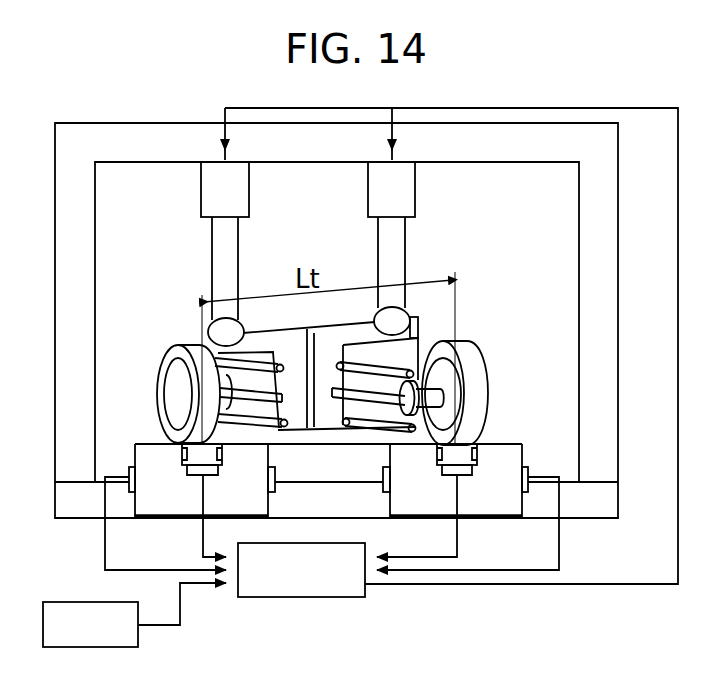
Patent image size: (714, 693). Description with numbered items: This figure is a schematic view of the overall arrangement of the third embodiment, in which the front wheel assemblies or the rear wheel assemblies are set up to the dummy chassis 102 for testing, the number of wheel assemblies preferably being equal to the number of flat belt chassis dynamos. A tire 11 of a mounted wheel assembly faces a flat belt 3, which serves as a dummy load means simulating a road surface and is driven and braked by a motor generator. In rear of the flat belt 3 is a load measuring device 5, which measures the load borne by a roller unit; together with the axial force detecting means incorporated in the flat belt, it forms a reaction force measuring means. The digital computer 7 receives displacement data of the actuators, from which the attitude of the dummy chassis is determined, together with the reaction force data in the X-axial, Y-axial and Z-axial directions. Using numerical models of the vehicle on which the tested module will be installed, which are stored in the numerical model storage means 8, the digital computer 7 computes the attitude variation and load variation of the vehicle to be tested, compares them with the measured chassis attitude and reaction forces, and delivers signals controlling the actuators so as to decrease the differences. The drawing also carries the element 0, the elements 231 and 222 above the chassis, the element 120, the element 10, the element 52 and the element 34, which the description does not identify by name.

The tire testing apparatus 0 is at (128, 123).
The first actuator 231 is at (248, 192).
The second actuator 222 is at (412, 192).
The dummy chassis 102 is at (408, 333).
The load drum 120 is at (160, 380).
The tire 10 is at (480, 360).
The tire 11 is at (492, 392).
The load measuring device 5 is at (480, 460).
The support 52 is at (203, 478).
The base block 34 is at (187, 505).
The flat belt 3 is at (477, 505).
The digital computer 7 is at (285, 598).
The numerical model storage means 8 is at (100, 602).